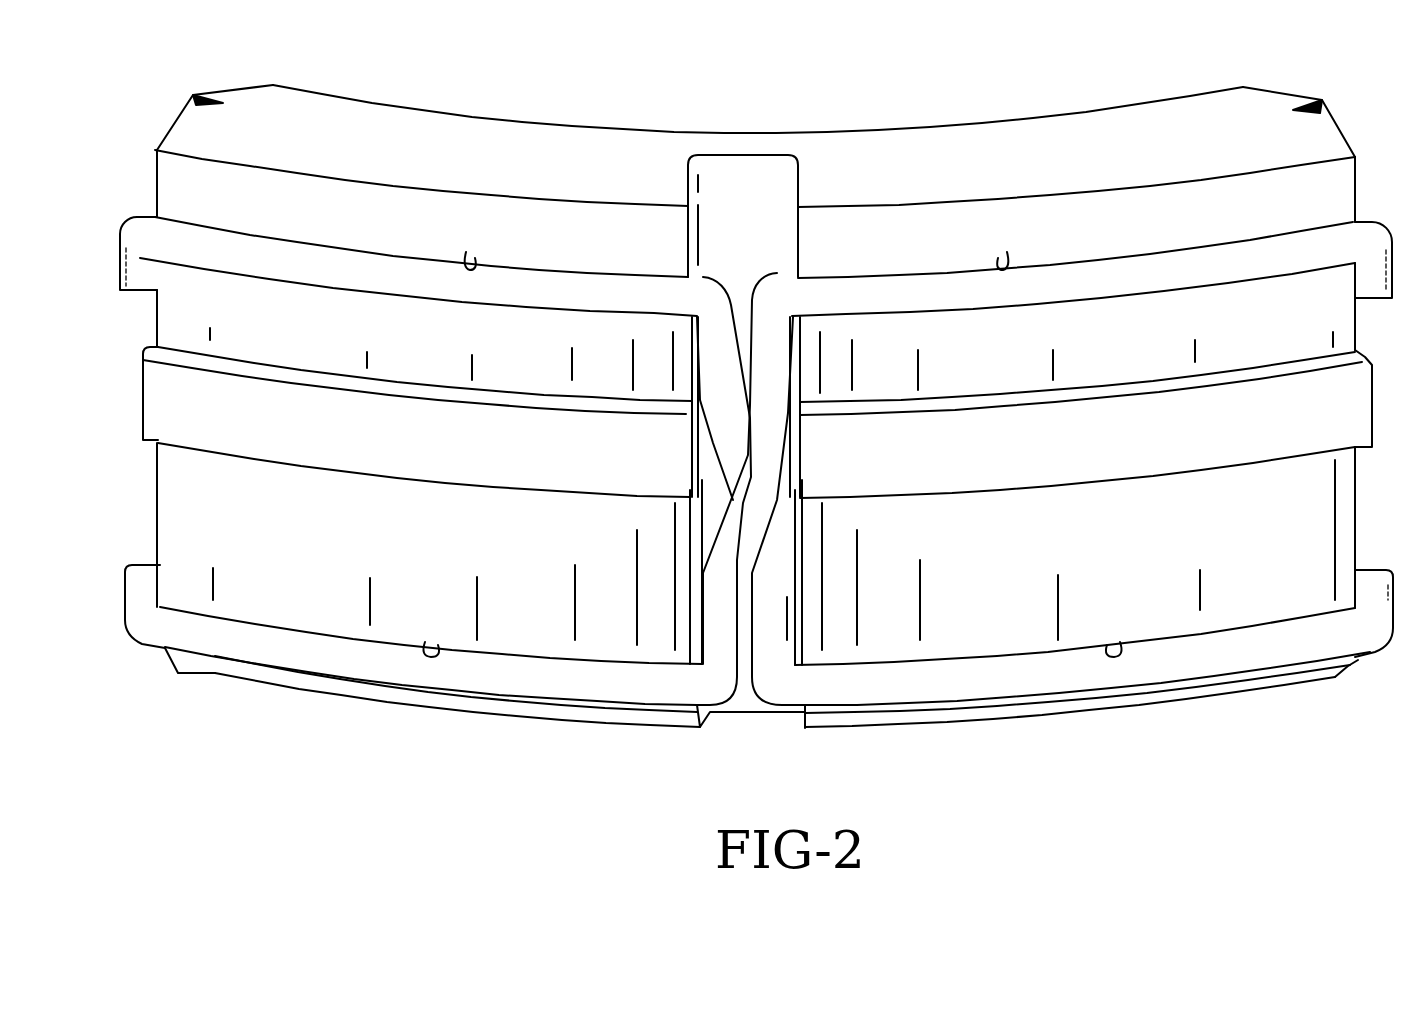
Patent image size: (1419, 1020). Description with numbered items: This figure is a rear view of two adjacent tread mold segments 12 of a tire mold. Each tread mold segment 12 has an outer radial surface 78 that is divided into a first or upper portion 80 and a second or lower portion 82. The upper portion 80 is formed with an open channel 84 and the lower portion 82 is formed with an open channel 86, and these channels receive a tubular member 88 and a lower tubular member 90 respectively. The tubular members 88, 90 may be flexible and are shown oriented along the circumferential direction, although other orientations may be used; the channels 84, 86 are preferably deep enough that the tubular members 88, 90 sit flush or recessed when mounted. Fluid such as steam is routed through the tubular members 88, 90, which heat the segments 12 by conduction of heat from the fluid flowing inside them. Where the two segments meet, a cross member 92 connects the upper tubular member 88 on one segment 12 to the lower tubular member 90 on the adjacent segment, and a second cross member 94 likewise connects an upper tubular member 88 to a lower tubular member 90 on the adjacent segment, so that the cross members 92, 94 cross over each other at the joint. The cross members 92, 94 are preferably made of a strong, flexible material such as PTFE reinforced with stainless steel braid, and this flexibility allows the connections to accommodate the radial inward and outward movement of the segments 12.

The tread mold segment 12 is at (452, 160).
The outer radial surface 78 is at (396, 236).
The first or upper portion 80 is at (408, 357).
The second or lower portion 82 is at (318, 563).
The open channel 84 is at (466, 252).
The open channel 86 is at (425, 642).
The tubular member 88 is at (329, 266).
The lower tubular member 90 is at (477, 668).
The cross member 92 is at (722, 408).
The second cross member 94 is at (777, 408).